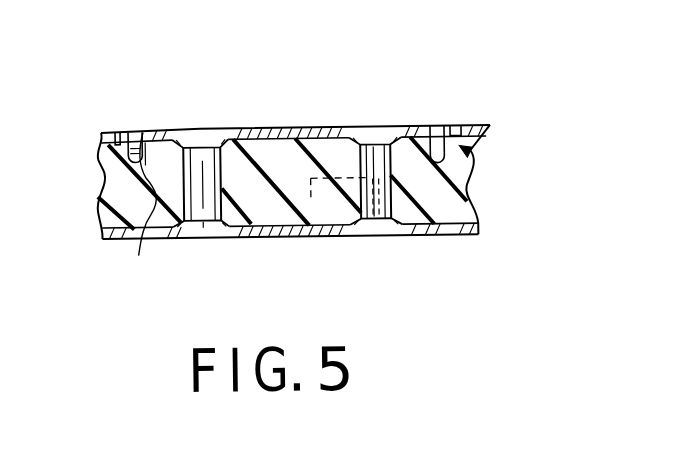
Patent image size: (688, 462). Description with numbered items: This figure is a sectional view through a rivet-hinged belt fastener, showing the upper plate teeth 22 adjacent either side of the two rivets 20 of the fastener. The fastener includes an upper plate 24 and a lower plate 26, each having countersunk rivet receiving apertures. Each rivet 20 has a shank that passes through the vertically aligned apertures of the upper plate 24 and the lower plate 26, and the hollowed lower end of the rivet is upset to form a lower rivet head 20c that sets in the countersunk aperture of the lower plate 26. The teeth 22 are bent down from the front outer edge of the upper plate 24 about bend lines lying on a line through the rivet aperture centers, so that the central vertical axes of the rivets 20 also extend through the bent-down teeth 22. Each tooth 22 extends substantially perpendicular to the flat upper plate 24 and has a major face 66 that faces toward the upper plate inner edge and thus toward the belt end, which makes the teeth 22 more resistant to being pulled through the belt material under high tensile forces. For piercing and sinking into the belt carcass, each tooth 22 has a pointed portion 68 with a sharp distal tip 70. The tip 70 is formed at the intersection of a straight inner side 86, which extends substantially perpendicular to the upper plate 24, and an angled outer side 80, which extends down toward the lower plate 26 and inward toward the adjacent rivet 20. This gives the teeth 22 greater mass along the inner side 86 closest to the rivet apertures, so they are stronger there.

The rivet 20 is at (210, 177).
The lower rivet head 20c is at (198, 240).
The teeth 22 is at (471, 160).
The upper plate 24 is at (412, 131).
The lower plate 26 is at (416, 240).
The major face 66 is at (452, 136).
The pointed portion 68 is at (141, 151).
The sharp distal tip 70 is at (143, 216).
The outer side 80 is at (117, 133).
The inner side 86 is at (148, 158).